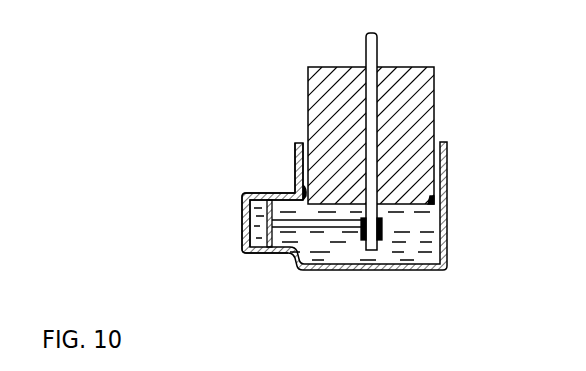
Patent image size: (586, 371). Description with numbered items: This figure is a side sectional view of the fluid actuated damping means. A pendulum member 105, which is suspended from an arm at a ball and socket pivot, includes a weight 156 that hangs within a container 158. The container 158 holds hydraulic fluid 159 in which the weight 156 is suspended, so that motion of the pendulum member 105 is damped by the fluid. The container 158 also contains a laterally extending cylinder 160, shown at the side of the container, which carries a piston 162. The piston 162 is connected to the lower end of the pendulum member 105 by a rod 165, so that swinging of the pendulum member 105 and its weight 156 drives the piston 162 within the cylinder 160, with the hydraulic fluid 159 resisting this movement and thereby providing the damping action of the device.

The pendulum member 105 is at (371, 55).
The weight 156 is at (425, 103).
The container 158 is at (393, 271).
The hydraulic fluid 159 is at (320, 253).
The laterally extending cylinder 160 is at (243, 220).
The piston 162 is at (272, 250).
The rod 165 is at (294, 192).